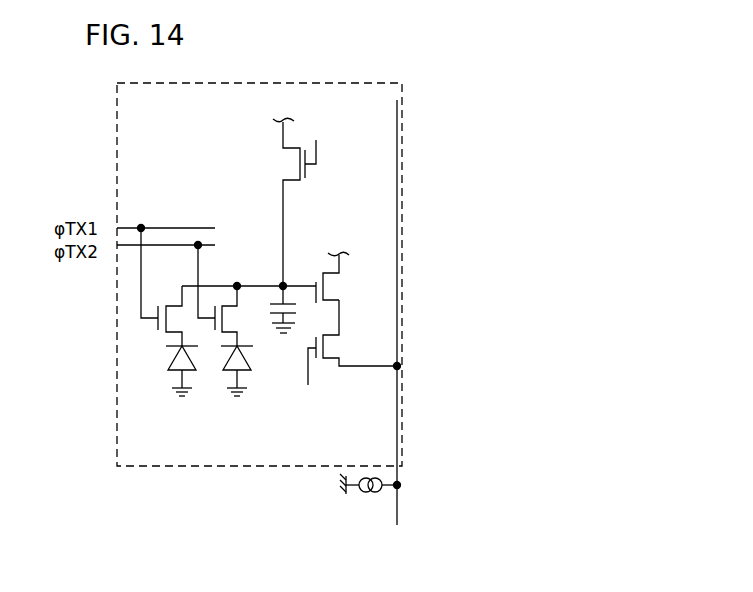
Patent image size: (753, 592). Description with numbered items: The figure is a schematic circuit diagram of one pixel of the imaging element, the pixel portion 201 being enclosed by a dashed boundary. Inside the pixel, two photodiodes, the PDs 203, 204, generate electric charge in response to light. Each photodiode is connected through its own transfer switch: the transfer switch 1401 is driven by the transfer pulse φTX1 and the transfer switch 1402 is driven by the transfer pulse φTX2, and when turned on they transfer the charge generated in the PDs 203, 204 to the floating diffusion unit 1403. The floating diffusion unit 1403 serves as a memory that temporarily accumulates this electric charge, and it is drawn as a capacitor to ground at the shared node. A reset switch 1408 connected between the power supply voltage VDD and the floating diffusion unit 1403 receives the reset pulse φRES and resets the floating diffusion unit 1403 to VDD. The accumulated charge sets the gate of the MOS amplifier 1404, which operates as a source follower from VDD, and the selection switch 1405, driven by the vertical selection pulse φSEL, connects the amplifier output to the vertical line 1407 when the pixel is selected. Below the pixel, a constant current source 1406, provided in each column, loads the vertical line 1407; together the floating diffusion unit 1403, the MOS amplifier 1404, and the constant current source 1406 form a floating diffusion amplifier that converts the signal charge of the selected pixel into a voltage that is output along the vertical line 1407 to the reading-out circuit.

The pixel portion 201 is at (222, 467).
The photodiode 203 is at (174, 370).
The photodiode 204 is at (229, 370).
The transfer switch 1401 is at (157, 328).
The transfer switch 1402 is at (217, 303).
The floating diffusion unit 1403 is at (276, 312).
The MOS amplifier 1404 is at (318, 272).
The selection switch 1405 is at (335, 357).
The constant current source 1406 is at (367, 493).
The vertical line 1407 is at (397, 443).
The reset switch 1408 is at (300, 151).